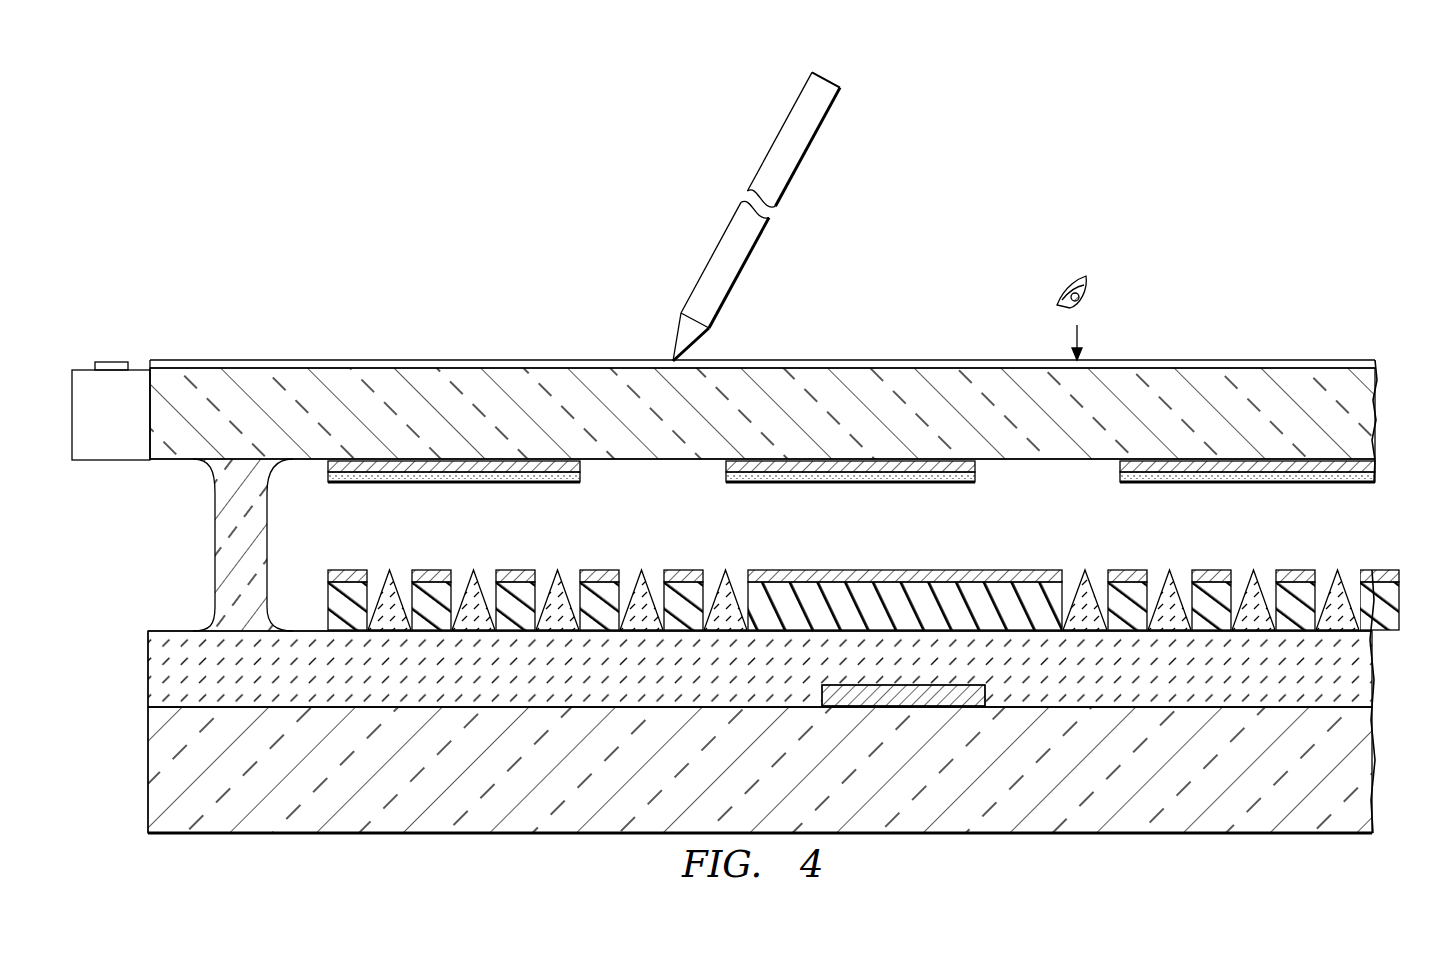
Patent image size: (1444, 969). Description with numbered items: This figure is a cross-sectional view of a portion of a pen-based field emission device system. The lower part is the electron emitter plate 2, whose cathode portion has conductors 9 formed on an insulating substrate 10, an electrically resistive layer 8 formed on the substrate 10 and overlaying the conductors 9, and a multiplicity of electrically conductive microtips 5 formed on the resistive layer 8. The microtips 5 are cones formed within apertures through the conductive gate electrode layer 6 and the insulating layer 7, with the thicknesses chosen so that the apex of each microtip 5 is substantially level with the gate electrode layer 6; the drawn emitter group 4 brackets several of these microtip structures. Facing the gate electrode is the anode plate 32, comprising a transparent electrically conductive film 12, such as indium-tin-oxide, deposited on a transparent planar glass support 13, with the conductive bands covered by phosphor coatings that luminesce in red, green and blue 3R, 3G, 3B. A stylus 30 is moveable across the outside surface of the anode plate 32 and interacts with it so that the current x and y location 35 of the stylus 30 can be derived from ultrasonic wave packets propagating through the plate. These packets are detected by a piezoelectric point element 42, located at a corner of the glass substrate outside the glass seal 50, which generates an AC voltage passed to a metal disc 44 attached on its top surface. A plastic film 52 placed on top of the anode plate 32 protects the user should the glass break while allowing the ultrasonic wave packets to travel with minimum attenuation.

The electron emitter plate 2 is at (788, 666).
The red phosphor coating 3R is at (582, 475).
The green phosphor coating 3G is at (849, 484).
The blue phosphor coating 3B is at (1120, 475).
The pixel element array 4 is at (537, 565).
The microtip 5 is at (382, 588).
The gate electrode layer 6 is at (432, 570).
The insulating layer 7 is at (473, 570).
The electrically resistive layer 8 is at (731, 683).
The conductor 9 is at (905, 708).
The insulating substrate 10 is at (725, 785).
The transparent electrically conductive film 12 is at (878, 482).
The transparent planar support 13 is at (727, 425).
The stylus 30 is at (734, 216).
The anode plate 32 is at (758, 392).
The x and y location 35 is at (673, 358).
The piezoelectric point element 42 is at (110, 461).
The metal disc 44 is at (106, 361).
The glass seal 50 is at (215, 530).
The plastic film 52 is at (518, 360).